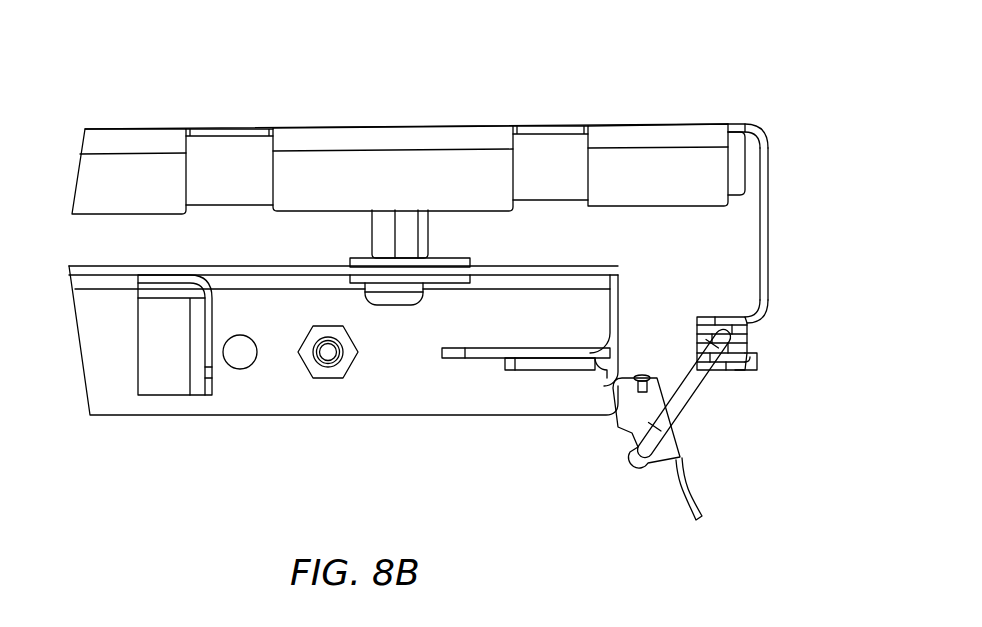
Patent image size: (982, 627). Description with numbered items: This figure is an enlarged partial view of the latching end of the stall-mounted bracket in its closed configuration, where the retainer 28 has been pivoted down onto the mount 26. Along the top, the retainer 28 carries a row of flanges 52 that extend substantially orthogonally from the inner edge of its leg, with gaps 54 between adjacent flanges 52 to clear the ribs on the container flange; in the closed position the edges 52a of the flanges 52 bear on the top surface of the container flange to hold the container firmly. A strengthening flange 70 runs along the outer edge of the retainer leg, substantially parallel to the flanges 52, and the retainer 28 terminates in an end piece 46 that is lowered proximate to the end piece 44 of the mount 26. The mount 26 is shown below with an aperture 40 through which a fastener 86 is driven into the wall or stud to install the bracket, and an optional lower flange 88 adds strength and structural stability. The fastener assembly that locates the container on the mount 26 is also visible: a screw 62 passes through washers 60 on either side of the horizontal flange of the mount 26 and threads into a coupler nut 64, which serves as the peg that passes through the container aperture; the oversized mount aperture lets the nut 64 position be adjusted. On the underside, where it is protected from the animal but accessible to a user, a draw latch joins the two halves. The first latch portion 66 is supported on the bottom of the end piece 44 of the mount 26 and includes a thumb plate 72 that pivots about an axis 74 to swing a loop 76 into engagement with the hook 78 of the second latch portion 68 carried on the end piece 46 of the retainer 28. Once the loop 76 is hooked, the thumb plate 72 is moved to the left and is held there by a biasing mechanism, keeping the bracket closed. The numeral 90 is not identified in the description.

The retainer 28 is at (305, 118).
The flanges 52 is at (120, 172).
The edges of flanges 52a is at (318, 213).
The gaps 54 is at (222, 172).
The strengthening flange 70 is at (565, 188).
The top strip 90 is at (688, 122).
The end piece 46 is at (770, 207).
The second latch portion 68 is at (760, 335).
The hook 78 is at (748, 370).
The mount 26 is at (272, 430).
The lower flanges 88 is at (200, 338).
The apertures 40 is at (243, 368).
The fasteners 86 is at (328, 355).
The coupler nut 64 is at (383, 223).
The washer 60 is at (432, 257).
The screw 62 is at (393, 307).
The end piece 44 is at (480, 357).
The axis 74 is at (640, 377).
The first latch portion 66 is at (628, 470).
The loop 76 is at (692, 405).
The thumb plate 72 is at (690, 497).